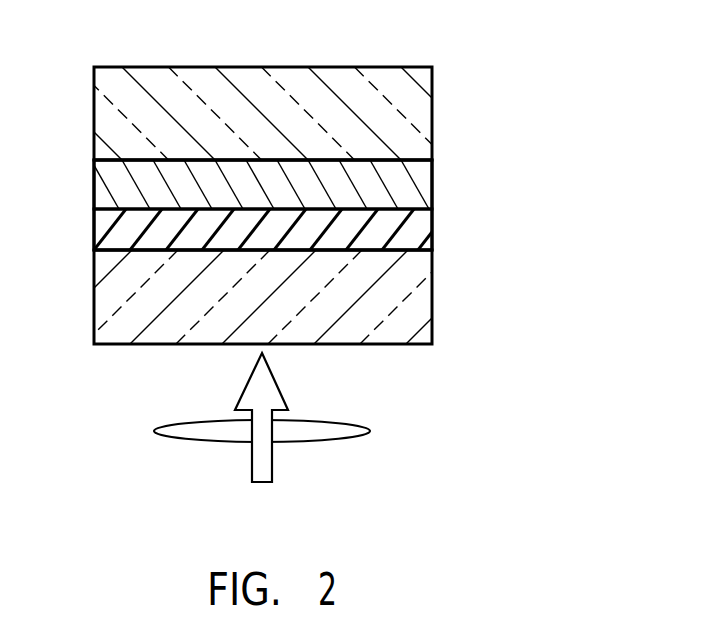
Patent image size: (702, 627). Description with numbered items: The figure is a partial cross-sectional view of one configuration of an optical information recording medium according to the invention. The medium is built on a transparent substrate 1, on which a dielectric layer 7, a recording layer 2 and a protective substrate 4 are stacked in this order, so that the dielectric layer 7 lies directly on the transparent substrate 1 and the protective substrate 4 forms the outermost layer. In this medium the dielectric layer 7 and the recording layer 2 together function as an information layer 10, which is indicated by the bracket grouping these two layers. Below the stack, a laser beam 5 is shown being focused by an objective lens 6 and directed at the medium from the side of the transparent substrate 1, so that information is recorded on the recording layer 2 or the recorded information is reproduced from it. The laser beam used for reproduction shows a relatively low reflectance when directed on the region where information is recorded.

The transparent substrate 1 is at (432, 298).
The recording layer 2 is at (432, 187).
The protective substrate 4 is at (432, 118).
The laser beam 5 is at (272, 467).
The objective lens 6 is at (368, 428).
The dielectric layer 7 is at (432, 232).
The information layer 10 is at (537, 158).